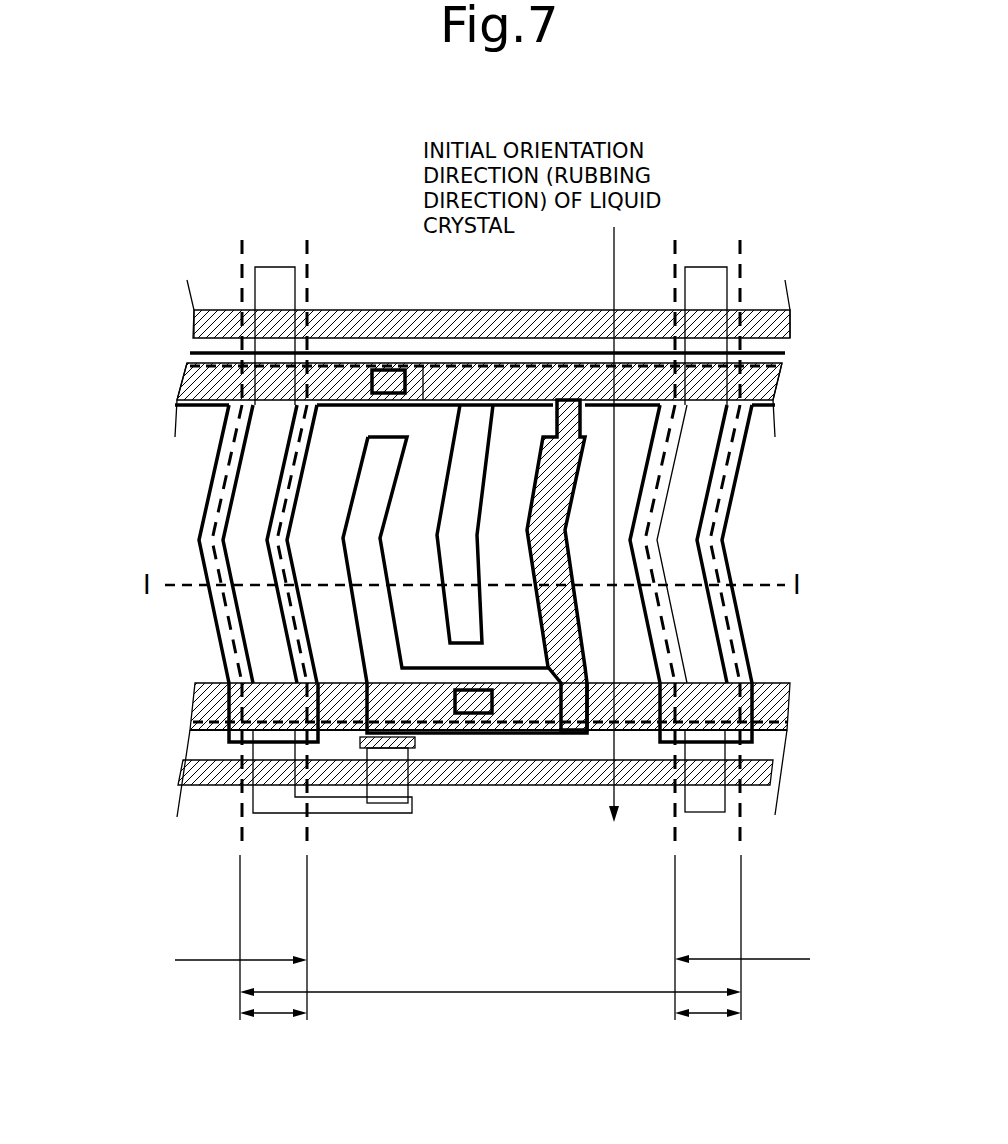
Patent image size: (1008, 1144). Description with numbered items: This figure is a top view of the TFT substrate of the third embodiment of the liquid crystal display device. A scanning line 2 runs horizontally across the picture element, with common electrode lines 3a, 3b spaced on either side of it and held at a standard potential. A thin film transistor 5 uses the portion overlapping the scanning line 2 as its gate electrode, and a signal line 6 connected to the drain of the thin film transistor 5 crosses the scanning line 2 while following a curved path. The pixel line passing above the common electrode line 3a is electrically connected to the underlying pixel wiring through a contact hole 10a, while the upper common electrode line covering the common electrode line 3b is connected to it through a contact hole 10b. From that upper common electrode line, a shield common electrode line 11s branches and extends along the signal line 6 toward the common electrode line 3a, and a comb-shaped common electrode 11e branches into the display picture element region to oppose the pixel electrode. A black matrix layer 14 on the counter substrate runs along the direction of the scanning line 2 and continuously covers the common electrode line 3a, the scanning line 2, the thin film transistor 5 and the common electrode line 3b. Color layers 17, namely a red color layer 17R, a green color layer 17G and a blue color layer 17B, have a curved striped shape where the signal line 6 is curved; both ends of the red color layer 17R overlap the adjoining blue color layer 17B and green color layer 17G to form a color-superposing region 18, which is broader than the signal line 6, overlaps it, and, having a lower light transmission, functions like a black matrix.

The scanning line 2 is at (195, 313).
The common electrode line 3a is at (200, 711).
The common electrode line 3b is at (177, 397).
The thin film transistor 5 is at (387, 773).
The signal line 6 is at (275, 282).
The contact hole 10a is at (478, 714).
The contact hole 10b is at (386, 371).
The common electrode 11e is at (463, 540).
The shield common electrode line 11s is at (215, 630).
The black matrix layer 14 is at (783, 363).
The color layers 17 is at (287, 490).
The blue color layer 17B is at (202, 960).
The green color layer 17G is at (785, 958).
The red color layer 17R is at (490, 1021).
The color-superposing region 18 is at (272, 1014).